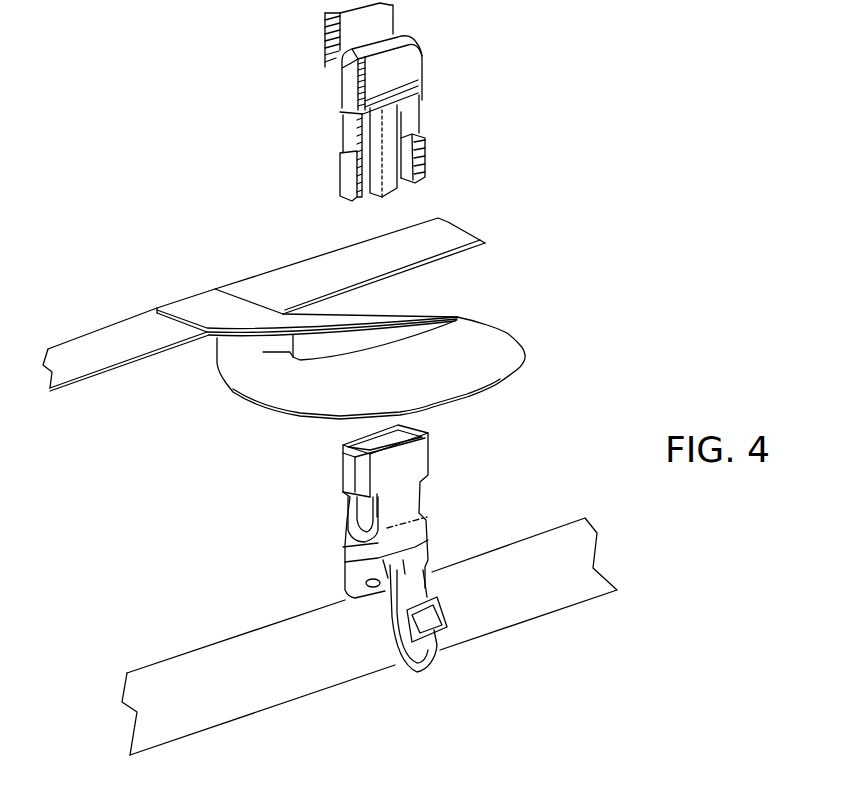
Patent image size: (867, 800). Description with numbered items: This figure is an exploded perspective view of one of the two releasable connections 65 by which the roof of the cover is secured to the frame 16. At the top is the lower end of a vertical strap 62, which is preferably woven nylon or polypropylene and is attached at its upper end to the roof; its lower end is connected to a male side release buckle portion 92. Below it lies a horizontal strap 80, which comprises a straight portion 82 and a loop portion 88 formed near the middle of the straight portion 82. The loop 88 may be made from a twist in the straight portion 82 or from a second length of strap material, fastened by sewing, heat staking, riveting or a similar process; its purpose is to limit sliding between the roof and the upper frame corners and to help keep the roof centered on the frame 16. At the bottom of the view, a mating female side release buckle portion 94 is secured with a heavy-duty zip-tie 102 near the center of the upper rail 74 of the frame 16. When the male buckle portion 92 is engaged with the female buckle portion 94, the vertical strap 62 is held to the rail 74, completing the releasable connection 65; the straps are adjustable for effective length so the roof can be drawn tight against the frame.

The releasable connection 65 is at (165, 147).
The vertical strap 62 is at (395, 22).
The male side release buckle portion 92 is at (422, 118).
The horizontal strap 80 is at (282, 265).
The straight portion 82 is at (400, 260).
The loop portion 88 is at (487, 334).
The female side release buckle portion 94 is at (435, 462).
The zip-tie 102 is at (413, 655).
The rail 74 is at (298, 683).
The frame 16 is at (592, 605).